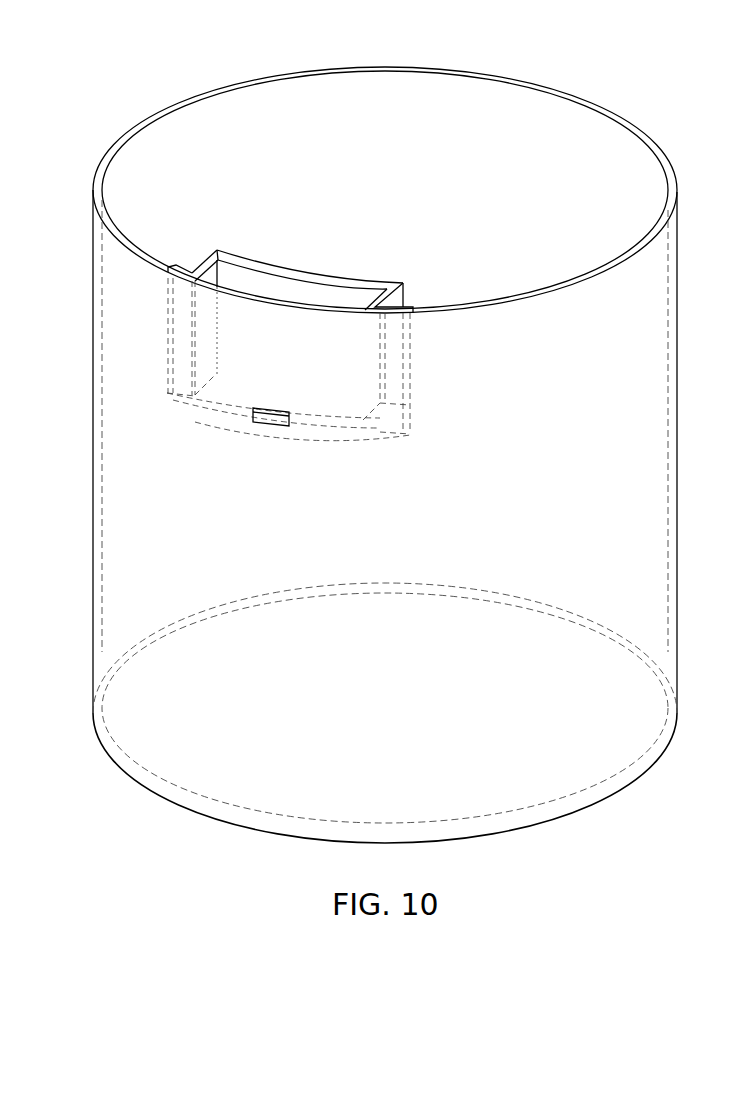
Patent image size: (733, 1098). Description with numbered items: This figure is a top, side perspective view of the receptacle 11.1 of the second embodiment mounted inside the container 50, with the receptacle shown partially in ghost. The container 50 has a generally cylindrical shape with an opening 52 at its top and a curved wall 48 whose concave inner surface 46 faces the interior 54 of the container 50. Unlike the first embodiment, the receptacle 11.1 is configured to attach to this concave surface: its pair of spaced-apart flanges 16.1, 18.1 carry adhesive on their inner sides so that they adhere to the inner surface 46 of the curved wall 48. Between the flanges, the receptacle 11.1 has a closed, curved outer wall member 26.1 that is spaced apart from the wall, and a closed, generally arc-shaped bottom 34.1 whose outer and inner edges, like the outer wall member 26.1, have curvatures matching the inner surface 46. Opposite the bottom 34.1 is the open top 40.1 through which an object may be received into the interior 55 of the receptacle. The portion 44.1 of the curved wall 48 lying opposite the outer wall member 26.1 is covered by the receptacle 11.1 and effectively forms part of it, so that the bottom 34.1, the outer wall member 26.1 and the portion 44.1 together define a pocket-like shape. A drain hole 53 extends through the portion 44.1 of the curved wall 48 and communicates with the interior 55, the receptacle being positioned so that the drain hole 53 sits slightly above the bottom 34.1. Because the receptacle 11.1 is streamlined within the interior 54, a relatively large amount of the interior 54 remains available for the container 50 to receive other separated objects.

The container 50 is at (133, 100).
The opening 52 is at (258, 118).
The interior of the container 54 is at (518, 123).
The inner surface 46 is at (587, 203).
The curved wall 48 is at (123, 283).
The receptacle 11.1 is at (278, 267).
The open top 40.1 is at (243, 262).
The interior of the receptacle 55 is at (228, 280).
The outer wall member 26.1 is at (358, 286).
The flange 16.1 is at (180, 329).
The flange 18.1 is at (393, 338).
The portion of the curved wall 44.1 is at (317, 375).
The bottom 34.1 is at (237, 402).
The drain hole 53 is at (270, 427).